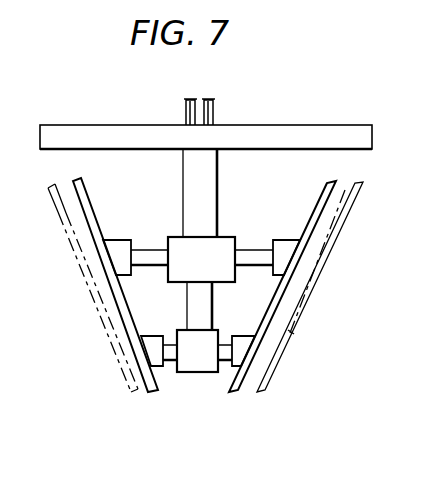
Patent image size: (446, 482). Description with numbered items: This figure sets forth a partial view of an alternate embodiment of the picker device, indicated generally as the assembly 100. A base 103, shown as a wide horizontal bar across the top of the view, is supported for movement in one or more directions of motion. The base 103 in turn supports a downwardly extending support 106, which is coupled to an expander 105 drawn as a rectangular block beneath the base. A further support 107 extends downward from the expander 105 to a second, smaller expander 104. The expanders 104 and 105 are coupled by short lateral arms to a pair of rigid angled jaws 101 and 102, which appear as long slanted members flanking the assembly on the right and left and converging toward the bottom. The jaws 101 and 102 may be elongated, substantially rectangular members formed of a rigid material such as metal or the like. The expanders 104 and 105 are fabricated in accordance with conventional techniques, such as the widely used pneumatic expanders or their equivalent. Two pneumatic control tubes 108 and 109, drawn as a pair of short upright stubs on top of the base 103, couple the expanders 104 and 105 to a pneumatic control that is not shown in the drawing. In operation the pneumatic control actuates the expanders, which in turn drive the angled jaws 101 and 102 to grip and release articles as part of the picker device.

The test fixture assembly 100 is at (303, 324).
The rigid angled jaw 101 is at (293, 297).
The rigid angled jaw 102 is at (135, 332).
The base 103 is at (337, 133).
The expander 104 is at (204, 362).
The expander 105 is at (212, 257).
The support 106 is at (195, 191).
The support 107 is at (202, 309).
The pneumatic control tube 108 is at (184, 107).
The pneumatic control tube 109 is at (213, 108).